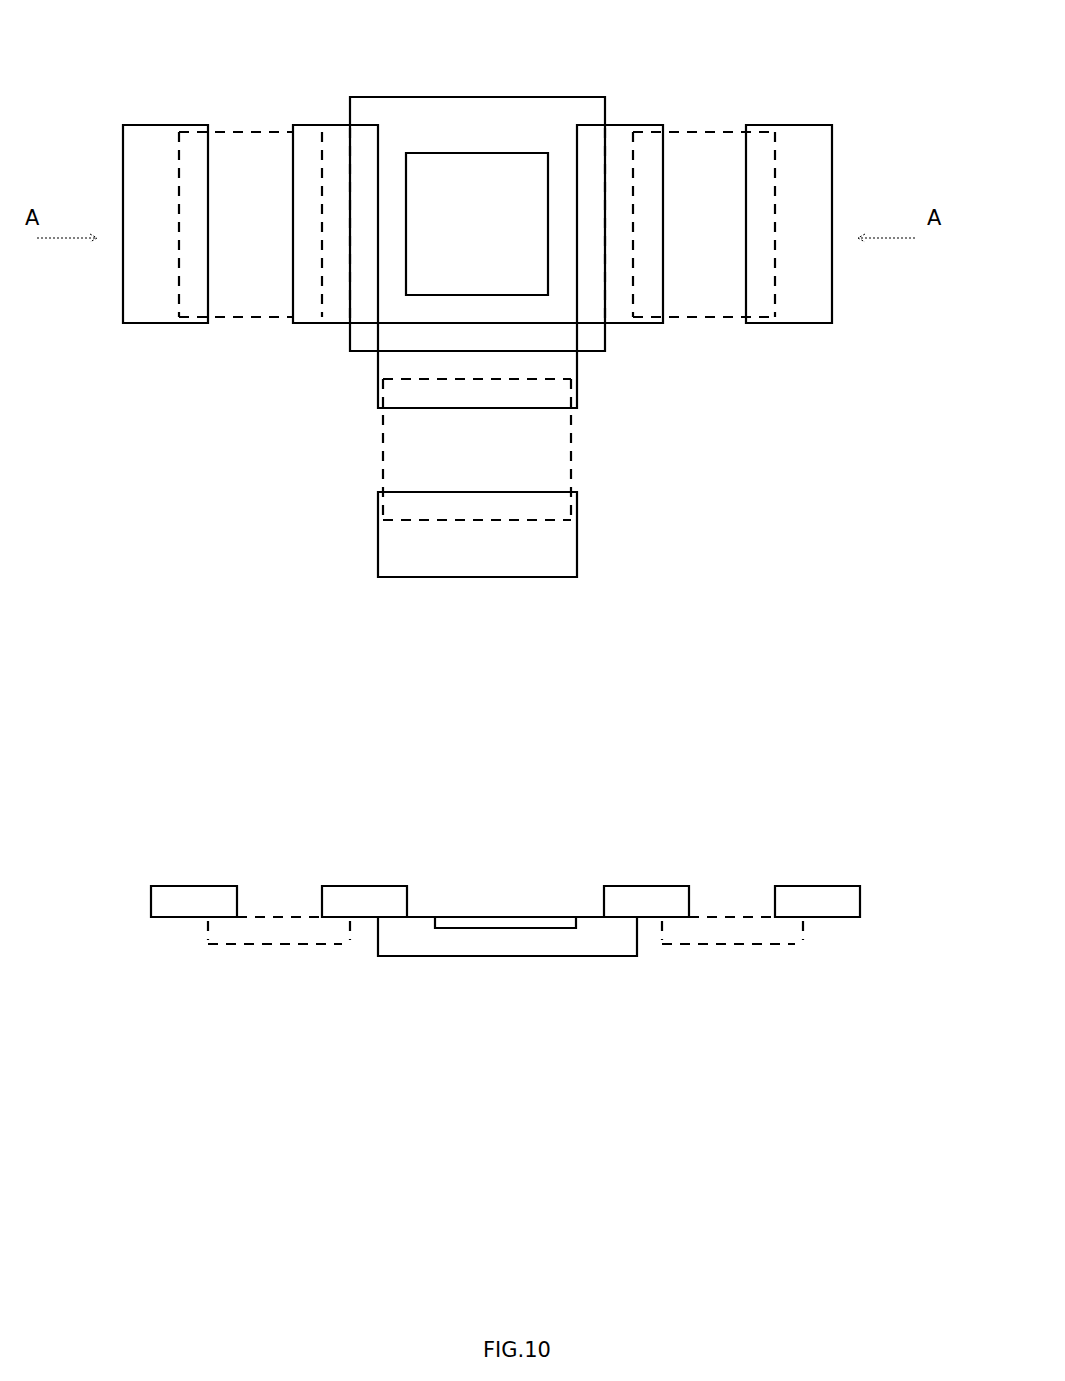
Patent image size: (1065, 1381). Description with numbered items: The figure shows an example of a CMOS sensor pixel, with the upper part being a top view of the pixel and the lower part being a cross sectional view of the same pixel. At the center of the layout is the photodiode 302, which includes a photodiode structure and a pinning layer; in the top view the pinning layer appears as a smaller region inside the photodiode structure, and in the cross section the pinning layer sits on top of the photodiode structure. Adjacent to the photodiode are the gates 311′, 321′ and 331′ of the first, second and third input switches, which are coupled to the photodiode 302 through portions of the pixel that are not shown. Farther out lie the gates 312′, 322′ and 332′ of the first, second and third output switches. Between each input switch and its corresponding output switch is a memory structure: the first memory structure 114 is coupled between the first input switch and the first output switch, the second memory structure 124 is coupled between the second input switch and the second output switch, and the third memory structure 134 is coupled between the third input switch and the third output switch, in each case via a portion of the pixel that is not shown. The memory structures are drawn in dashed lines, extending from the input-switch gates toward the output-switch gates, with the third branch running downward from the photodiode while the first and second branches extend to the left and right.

The photodiode 302 is at (492, 97).
The gate of first output switch 312′ is at (158, 125).
The gate of first input switch 311′ is at (338, 118).
The gate of second input switch 321′ is at (613, 122).
The gate of second output switch 322′ is at (802, 118).
The gate of third input switch 331′ is at (377, 360).
The gate of third output switch 332′ is at (377, 548).
The first memory structure 114 is at (263, 128).
The second memory structure 124 is at (575, 440).
The third memory structure 134 is at (700, 128).